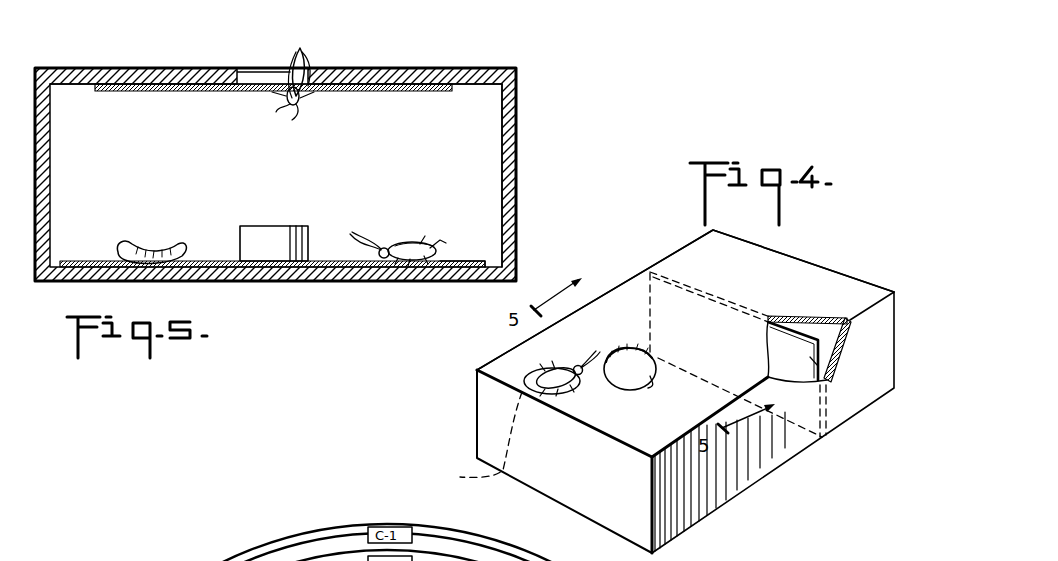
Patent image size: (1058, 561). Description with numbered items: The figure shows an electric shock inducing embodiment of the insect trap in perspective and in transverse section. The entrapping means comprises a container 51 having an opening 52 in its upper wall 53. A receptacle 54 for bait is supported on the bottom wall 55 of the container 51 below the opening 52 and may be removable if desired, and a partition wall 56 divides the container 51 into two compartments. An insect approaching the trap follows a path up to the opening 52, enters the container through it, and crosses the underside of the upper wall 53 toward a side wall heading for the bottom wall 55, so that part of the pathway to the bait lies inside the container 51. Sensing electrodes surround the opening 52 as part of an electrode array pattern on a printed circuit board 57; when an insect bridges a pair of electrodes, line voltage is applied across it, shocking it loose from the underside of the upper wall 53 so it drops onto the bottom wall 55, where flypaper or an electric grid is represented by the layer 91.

In FIG. 5, the container 51 is at (447, 28).
In FIG. 4, the container 51 is at (836, 240).
In FIG. 5, the opening 52 is at (251, 68).
In FIG. 4, the opening 52 is at (648, 381).
In FIG. 5, the upper wall 53 is at (128, 68).
In FIG. 4, the upper wall 53 is at (517, 355).
In FIG. 5, the receptacle for bait 54 is at (312, 226).
In FIG. 5, the bottom wall 55 is at (366, 283).
In FIG. 5, the partition wall 56 is at (485, 137).
In FIG. 4, the partition wall 56 is at (827, 380).
In FIG. 5, the printed circuit board 57 is at (135, 92).
In FIG. 5, the layer 91 is at (476, 260).